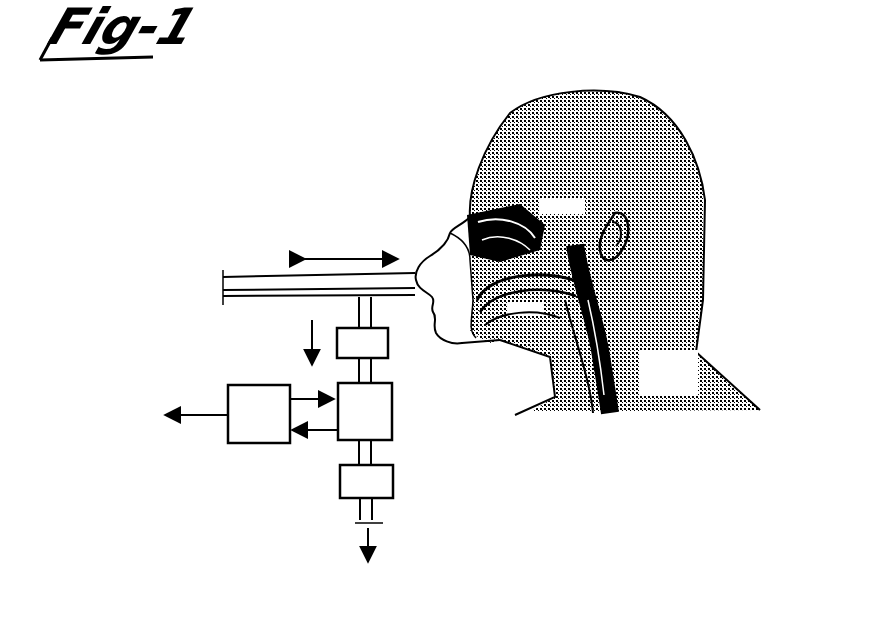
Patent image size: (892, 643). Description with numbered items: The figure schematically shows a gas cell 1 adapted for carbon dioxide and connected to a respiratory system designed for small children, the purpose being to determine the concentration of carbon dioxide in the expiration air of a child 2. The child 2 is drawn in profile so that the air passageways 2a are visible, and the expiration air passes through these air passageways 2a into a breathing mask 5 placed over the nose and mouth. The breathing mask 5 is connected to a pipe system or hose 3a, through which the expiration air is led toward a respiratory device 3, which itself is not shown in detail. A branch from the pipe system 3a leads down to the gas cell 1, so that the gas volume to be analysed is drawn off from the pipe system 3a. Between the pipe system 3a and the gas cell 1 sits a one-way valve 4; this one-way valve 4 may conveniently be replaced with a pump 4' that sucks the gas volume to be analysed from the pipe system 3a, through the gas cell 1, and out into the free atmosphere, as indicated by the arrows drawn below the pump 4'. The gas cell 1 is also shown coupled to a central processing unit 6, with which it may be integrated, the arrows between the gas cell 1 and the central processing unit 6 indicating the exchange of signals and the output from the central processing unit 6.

The gas cell 1 is at (380, 405).
The child 2 is at (683, 175).
The air passageways 2a is at (627, 335).
The respiratory device 3 is at (182, 303).
The pipe system 3a is at (258, 283).
The one-way valve 4 is at (389, 352).
The pump 4' is at (336, 481).
The breathing mask 5 is at (448, 232).
The central processing unit 6 is at (235, 395).